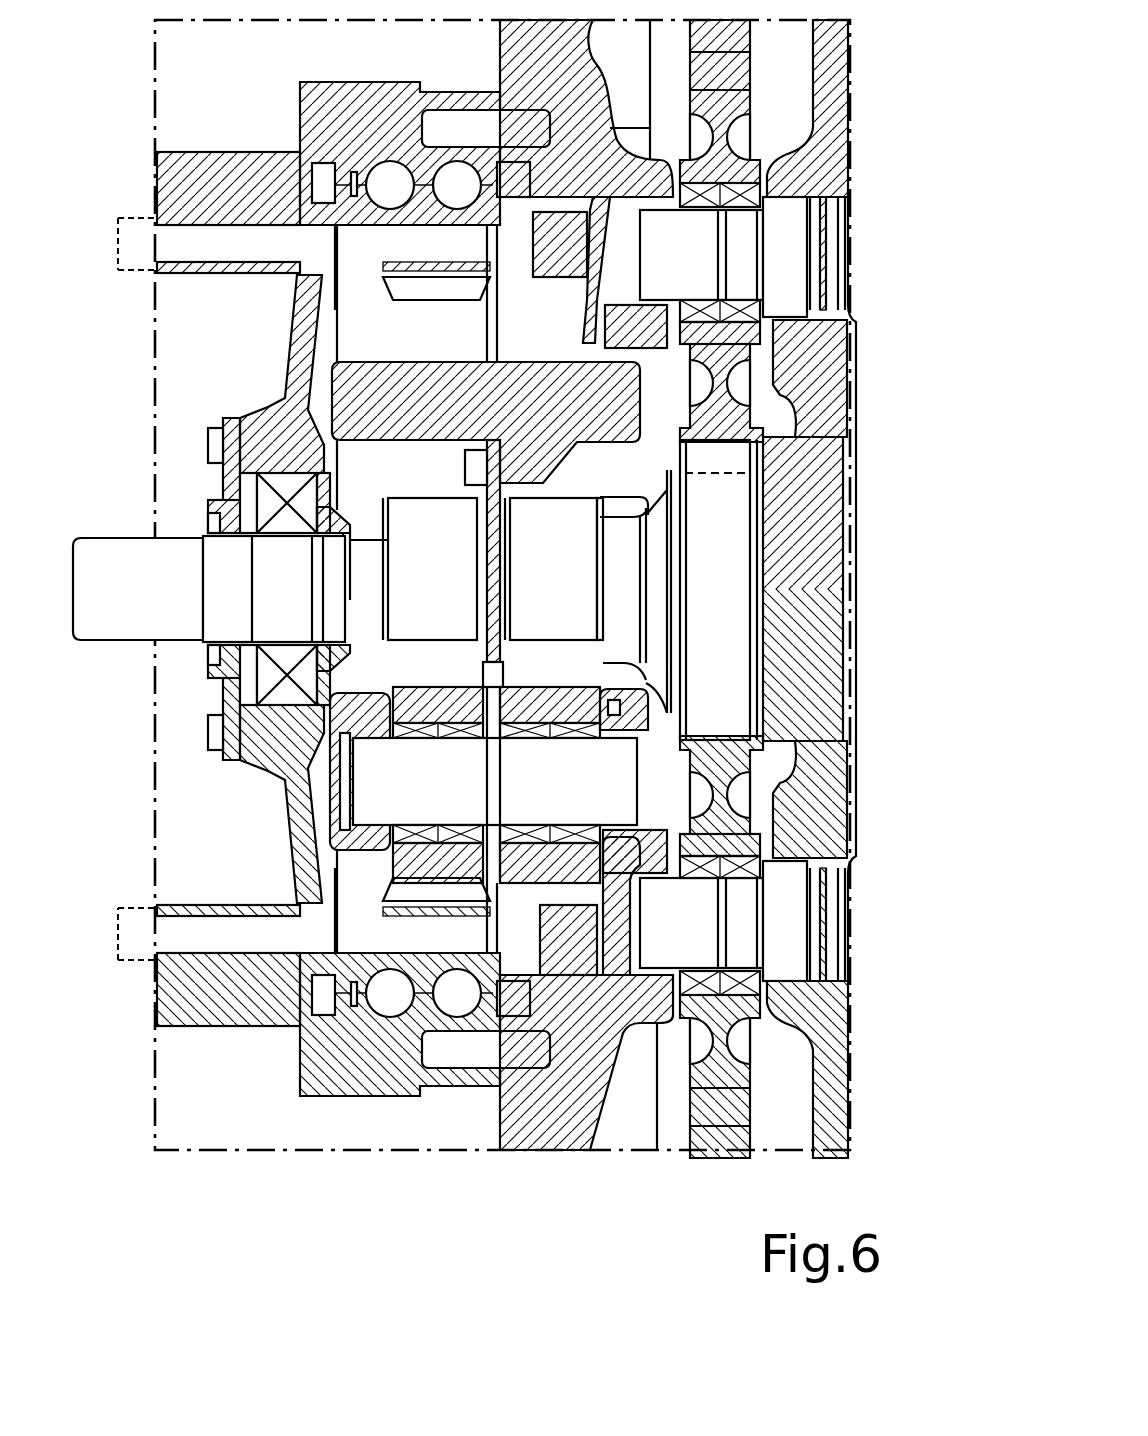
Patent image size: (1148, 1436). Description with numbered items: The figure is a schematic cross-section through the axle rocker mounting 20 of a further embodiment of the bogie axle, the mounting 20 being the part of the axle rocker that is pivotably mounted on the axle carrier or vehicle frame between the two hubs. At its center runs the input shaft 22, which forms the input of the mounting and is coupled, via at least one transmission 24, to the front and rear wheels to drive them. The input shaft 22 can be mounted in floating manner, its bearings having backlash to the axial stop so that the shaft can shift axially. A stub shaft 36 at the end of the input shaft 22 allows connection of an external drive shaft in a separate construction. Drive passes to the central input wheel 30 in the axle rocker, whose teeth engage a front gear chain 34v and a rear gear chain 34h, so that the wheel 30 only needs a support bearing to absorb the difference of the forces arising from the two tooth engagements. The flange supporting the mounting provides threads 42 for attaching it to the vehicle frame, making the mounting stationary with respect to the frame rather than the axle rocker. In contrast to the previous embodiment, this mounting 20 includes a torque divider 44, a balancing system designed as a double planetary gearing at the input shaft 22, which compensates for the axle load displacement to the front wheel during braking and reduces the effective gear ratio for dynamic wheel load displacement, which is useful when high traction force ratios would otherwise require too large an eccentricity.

The axle rocker mounting 20 is at (500, 630).
The input shaft 22 is at (209, 637).
The transmission 24 is at (460, 1158).
The central input wheel 30 is at (733, 575).
The front gear chain 34v is at (775, 100).
The rear gear chain 34h is at (782, 1090).
The stub shaft 36 is at (138, 638).
The threads 42 is at (385, 170).
The torque divider 44 is at (275, 378).